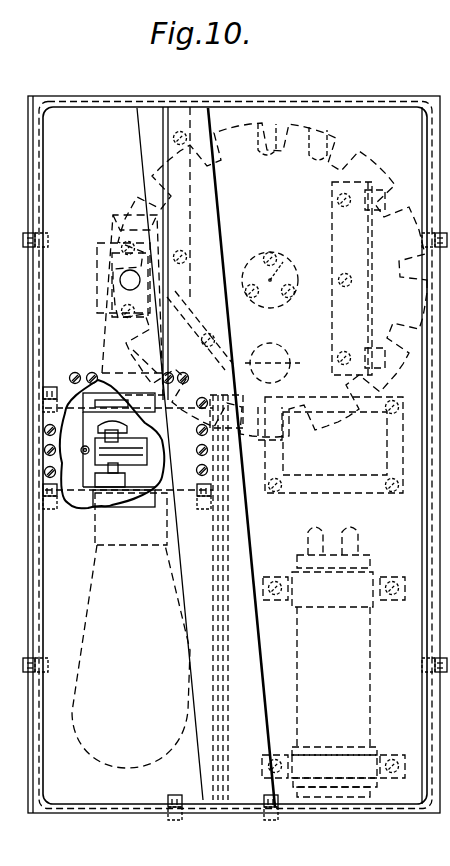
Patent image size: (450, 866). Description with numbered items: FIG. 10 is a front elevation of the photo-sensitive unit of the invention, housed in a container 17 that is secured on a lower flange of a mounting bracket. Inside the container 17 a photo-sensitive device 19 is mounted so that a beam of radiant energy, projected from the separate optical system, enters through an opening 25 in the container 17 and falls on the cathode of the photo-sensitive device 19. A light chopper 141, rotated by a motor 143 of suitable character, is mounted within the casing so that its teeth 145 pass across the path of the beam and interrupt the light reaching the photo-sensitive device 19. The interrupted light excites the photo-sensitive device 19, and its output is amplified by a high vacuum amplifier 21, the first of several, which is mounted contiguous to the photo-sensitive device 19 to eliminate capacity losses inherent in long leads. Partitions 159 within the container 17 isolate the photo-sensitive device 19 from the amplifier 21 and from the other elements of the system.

The container 17 is at (134, 812).
The photo-sensitive device 19 is at (115, 222).
The high vacuum amplifier 21 is at (110, 765).
The opening 25 is at (120, 280).
The light chopper 141 is at (292, 140).
The motor 143 is at (292, 188).
The teeth 145 is at (240, 120).
The partitions 159 is at (170, 118).